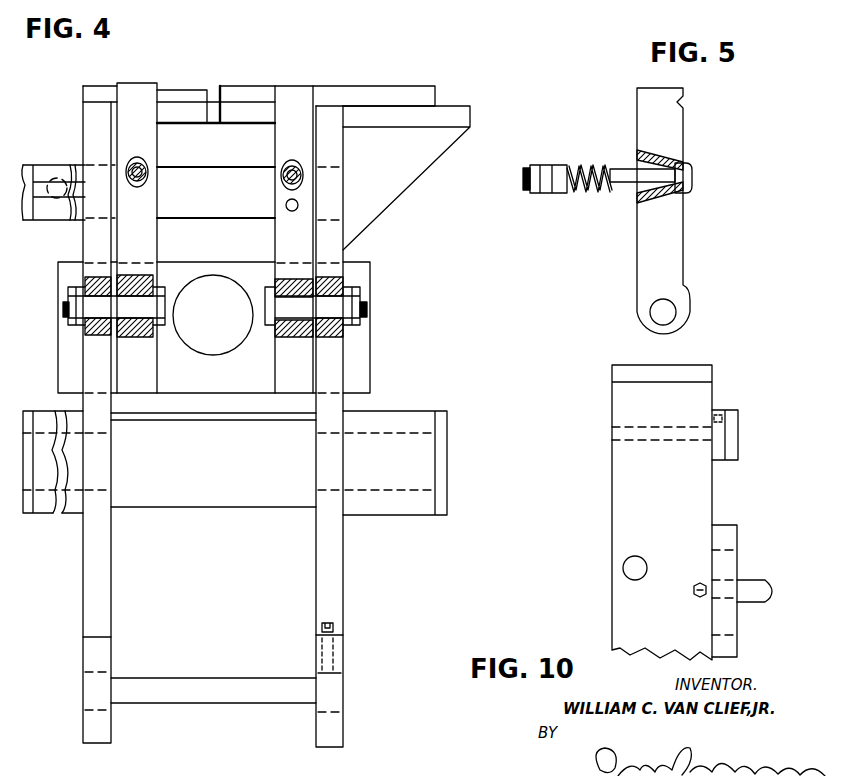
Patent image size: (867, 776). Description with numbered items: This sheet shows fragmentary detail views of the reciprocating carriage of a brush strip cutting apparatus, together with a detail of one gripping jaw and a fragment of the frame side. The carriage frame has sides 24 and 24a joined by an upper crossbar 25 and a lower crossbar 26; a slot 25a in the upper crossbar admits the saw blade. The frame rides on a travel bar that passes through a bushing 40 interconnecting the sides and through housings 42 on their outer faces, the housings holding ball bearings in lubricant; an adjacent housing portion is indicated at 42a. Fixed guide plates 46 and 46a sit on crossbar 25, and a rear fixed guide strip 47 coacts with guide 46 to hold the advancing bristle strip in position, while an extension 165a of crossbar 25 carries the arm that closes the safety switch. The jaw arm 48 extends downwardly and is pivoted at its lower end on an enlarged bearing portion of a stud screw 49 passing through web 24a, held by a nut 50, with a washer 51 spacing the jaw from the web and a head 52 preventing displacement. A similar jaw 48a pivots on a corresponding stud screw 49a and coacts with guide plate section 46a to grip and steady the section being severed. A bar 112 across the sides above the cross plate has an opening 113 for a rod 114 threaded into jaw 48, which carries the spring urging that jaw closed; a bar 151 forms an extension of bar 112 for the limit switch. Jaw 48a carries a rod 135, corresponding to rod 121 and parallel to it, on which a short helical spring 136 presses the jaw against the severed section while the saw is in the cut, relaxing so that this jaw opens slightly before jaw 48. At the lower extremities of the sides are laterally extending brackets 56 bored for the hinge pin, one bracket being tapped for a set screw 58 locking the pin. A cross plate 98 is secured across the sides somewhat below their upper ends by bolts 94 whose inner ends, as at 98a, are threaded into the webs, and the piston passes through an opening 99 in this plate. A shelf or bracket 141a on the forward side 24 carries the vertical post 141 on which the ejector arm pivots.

In FIG. 4, the side 24 is at (112, 570).
In FIG. 4, the side 24a is at (344, 580).
In FIG. 10, the side 24a is at (610, 613).
In FIG. 4, the upper crossbar 25 is at (172, 118).
In FIG. 4, the slot 25a is at (212, 118).
In FIG. 4, the lower crossbar 26 is at (208, 703).
In FIG. 4, the bushing 40 is at (225, 507).
In FIG. 4, the housing 42 is at (78, 517).
In FIG. 4, the bracket arm 42a is at (28, 513).
In FIG. 4, the fixed guide plate 46 is at (225, 88).
In FIG. 4, the fixed guide plate 46a is at (192, 90).
In FIG. 4, the rear fixed guide strip 47 is at (397, 86).
In FIG. 4, the jaw arm 48 is at (272, 97).
In FIG. 4, the jaw 48a is at (137, 83).
In FIG. 5, the jaw 48a is at (675, 243).
In FIG. 4, the stud screw 49 is at (332, 310).
In FIG. 4, the stud screw 49a is at (97, 306).
In FIG. 4, the nut 50 is at (356, 288).
In FIG. 4, the washer 51 is at (320, 283).
In FIG. 4, the head 52 is at (267, 323).
In FIG. 4, the bracket 56 is at (97, 637).
In FIG. 4, the set screw 58 is at (340, 635).
In FIG. 10, the bolt 94 is at (762, 603).
In FIG. 4, the cross plate 98 is at (371, 370).
In FIG. 10, the cross plate 98 is at (738, 530).
In FIG. 10, the threaded end of bolt 98a is at (700, 600).
In FIG. 4, the opening 99 is at (197, 346).
In FIG. 10, the opening 99 is at (740, 558).
In FIG. 4, the bar 112 is at (248, 170).
In FIG. 10, the bar 112 is at (716, 462).
In FIG. 10, the opening 113 is at (718, 412).
In FIG. 4, the rod 114 is at (286, 205).
In FIG. 4, the rod 121 is at (302, 175).
In FIG. 4, the rod 135 is at (148, 172).
In FIG. 5, the rod 135 is at (615, 170).
In FIG. 5, the helical spring 136 is at (610, 197).
In FIG. 10, the vertical post 141 is at (630, 422).
In FIG. 4, the shelf or bracket 141a is at (42, 195).
In FIG. 10, the bar 151 is at (739, 432).
In FIG. 4, the extension 165a is at (470, 118).